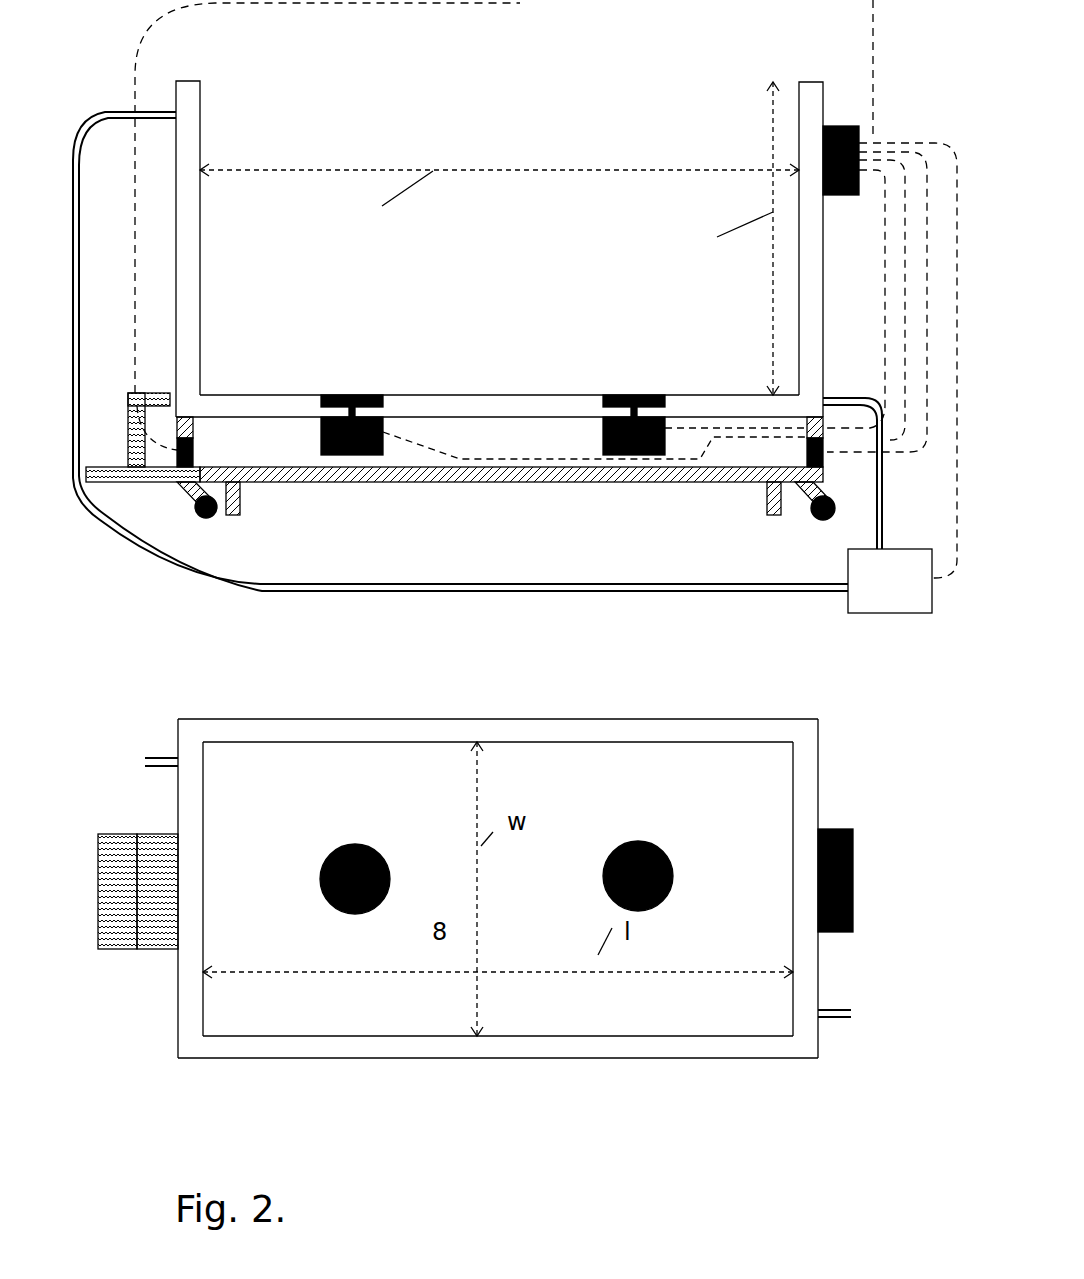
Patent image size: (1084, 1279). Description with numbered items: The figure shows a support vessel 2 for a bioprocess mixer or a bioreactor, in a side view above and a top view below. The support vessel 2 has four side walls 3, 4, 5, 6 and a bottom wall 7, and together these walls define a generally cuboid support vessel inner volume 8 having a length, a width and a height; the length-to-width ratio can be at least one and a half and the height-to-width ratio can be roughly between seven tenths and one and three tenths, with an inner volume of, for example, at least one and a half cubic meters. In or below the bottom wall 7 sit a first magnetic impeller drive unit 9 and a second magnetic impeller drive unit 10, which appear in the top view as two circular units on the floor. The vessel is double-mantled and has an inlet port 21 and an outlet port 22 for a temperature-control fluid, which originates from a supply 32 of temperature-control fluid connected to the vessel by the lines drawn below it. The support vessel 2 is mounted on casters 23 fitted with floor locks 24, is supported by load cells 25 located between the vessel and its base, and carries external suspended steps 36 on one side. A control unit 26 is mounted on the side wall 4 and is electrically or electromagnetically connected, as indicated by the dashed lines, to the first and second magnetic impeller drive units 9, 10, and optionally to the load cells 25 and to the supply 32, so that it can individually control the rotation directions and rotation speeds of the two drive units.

The support vessel 2 is at (155, 597).
The side wall 3 is at (199, 98).
The side wall 4 is at (800, 97).
The side wall 5 is at (773, 742).
The side wall 6 is at (773, 1036).
The bottom wall 7 is at (782, 395).
The support vessel inner volume 8 is at (499, 238).
The first magnetic impeller drive unit 9 is at (332, 455).
The second magnetic impeller drive unit 10 is at (599, 483).
The inlet port 21 is at (827, 400).
The outlet port 22 is at (157, 110).
The casters 23 is at (207, 503).
The floor locks 24 is at (232, 515).
The load cells 25 is at (193, 450).
The control unit 26 is at (859, 137).
The supply of temperature-control fluid 32 is at (852, 603).
The external suspended steps 36 is at (122, 483).